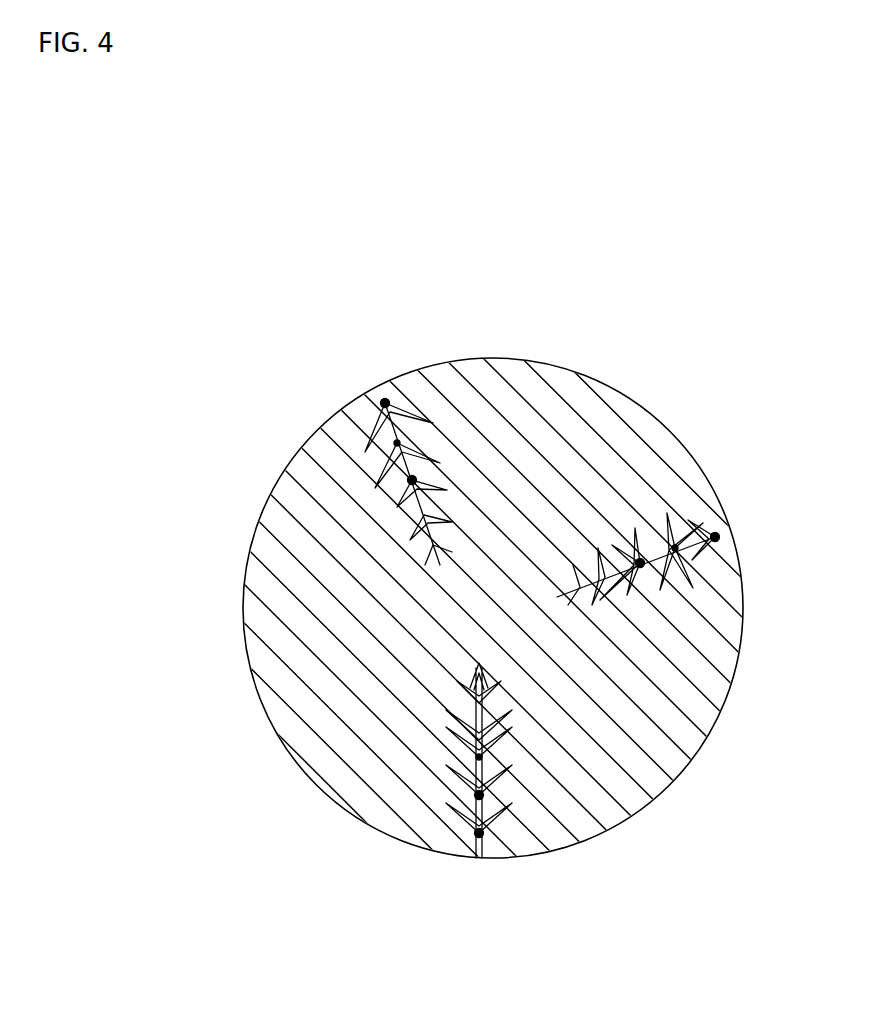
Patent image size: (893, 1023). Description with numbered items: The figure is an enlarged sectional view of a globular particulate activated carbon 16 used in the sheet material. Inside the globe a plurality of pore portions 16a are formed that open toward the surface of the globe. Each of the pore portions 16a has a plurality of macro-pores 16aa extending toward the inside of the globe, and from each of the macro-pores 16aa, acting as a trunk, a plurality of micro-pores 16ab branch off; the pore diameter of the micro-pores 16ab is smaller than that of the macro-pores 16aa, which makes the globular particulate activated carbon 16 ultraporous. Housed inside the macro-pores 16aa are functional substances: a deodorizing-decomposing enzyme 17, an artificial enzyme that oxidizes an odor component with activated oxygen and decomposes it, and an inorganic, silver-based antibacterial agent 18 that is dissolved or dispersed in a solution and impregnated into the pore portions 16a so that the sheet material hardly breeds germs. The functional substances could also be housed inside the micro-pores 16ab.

The globular particulate activated carbon 16 is at (342, 319).
The pore portions 16a is at (389, 546).
The macro-pores 16aa is at (418, 480).
The micro-pores 16ab is at (363, 440).
The deodorizing-decomposing enzyme 17 is at (385, 398).
The antibacterial agent 18 is at (672, 545).